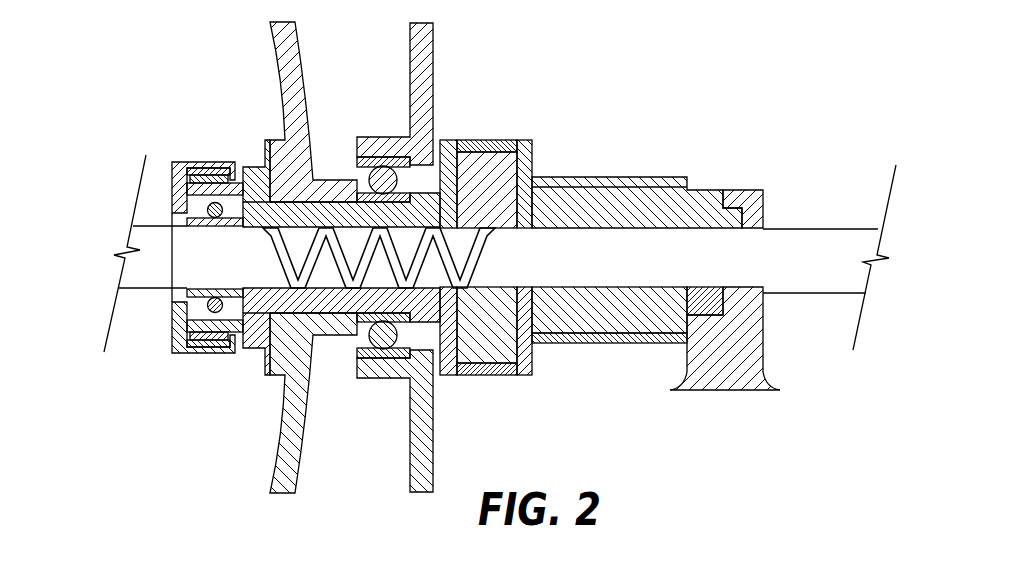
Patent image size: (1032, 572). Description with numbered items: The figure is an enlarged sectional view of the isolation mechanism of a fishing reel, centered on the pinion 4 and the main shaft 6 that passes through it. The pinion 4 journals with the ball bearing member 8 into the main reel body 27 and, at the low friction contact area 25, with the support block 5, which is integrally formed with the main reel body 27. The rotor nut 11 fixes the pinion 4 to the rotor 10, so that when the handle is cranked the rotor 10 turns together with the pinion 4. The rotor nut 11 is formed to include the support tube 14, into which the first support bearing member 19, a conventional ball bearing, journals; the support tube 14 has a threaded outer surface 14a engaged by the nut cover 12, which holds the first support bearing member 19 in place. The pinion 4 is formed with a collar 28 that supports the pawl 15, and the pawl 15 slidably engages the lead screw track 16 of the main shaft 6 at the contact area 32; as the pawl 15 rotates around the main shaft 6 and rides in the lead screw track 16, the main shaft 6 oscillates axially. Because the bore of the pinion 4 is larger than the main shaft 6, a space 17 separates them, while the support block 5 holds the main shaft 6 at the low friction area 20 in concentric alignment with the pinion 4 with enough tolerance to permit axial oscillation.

The pinion 4 is at (648, 203).
The support block 5 is at (748, 203).
The main shaft 6 is at (860, 278).
The ball bearing member 8 is at (383, 345).
The rotor 10 is at (290, 53).
The rotor nut 11 is at (258, 165).
The nut cover 12 is at (185, 162).
The support tube 14 is at (208, 353).
The threaded outer surface 14a is at (217, 343).
The pawl 15 is at (480, 165).
The lead screw track 16 is at (293, 276).
The space 17 is at (592, 292).
The first support bearing member 19 is at (215, 218).
The low friction area 20 is at (748, 292).
The low friction contact area 25 is at (693, 292).
The main reel body 27 is at (425, 72).
The collar 28 is at (530, 150).
The contact area 32 is at (487, 232).